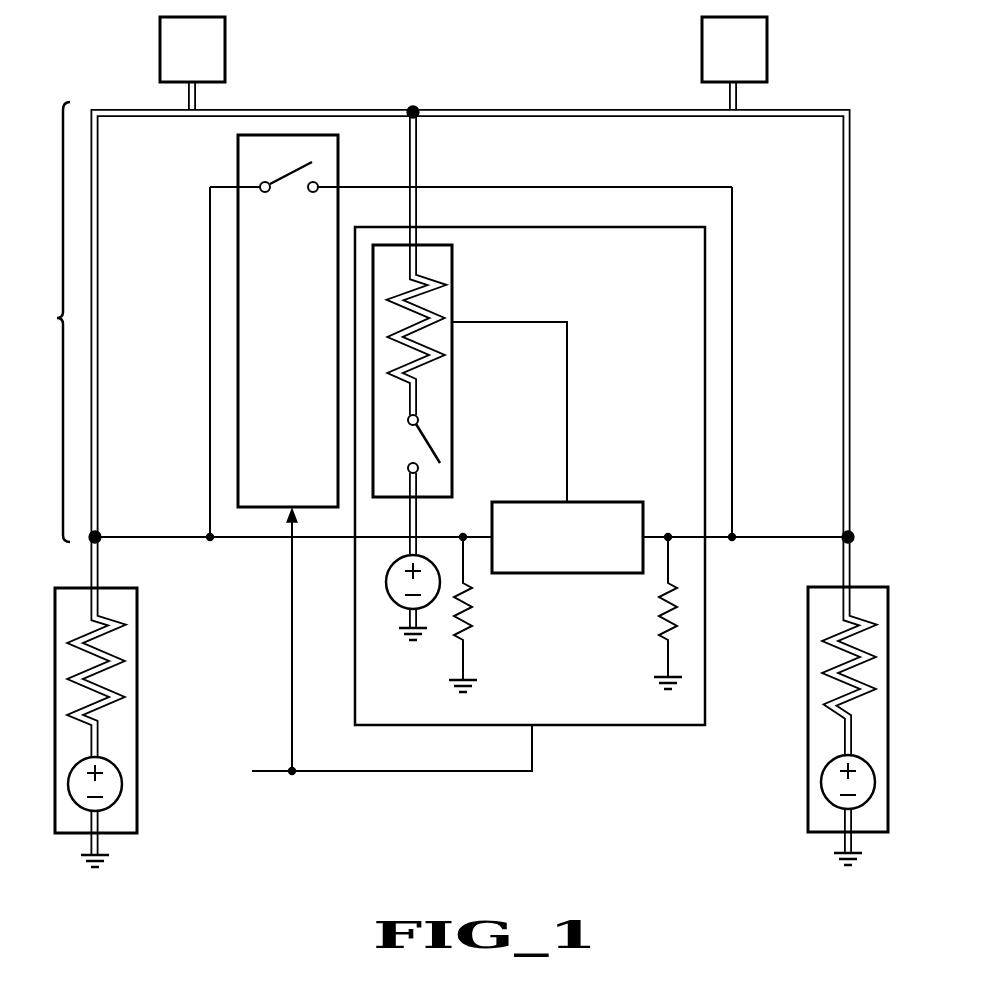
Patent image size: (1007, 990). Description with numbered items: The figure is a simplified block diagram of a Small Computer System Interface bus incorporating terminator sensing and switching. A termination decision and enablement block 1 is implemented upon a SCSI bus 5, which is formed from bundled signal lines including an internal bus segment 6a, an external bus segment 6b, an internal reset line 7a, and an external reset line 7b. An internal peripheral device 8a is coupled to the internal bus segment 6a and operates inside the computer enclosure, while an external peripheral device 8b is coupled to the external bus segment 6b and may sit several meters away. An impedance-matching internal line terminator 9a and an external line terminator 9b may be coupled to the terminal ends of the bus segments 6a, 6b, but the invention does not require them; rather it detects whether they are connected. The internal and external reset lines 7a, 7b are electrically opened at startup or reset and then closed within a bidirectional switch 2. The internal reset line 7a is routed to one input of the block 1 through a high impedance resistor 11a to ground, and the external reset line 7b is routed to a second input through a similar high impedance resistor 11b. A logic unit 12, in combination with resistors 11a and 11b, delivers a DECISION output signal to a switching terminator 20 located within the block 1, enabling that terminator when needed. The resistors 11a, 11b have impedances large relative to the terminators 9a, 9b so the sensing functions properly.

The termination decision and enablement block 1 is at (622, 225).
The bidirectional switch 2 is at (327, 165).
The SCSI bus 5 is at (57, 318).
The internal bus segment 6a is at (120, 108).
The external bus segment 6b is at (543, 108).
The internal reset line 7a is at (173, 537).
The external reset line 7b is at (732, 500).
The internal peripheral device 8a is at (206, 60).
The external peripheral device 8b is at (748, 60).
The internal line terminator 9a is at (137, 650).
The external line terminator 9b is at (808, 690).
The high impedance resistor 11a is at (455, 627).
The high impedance resistor 11b is at (678, 613).
The logic unit 12 is at (578, 561).
The switching terminator 20 is at (452, 270).